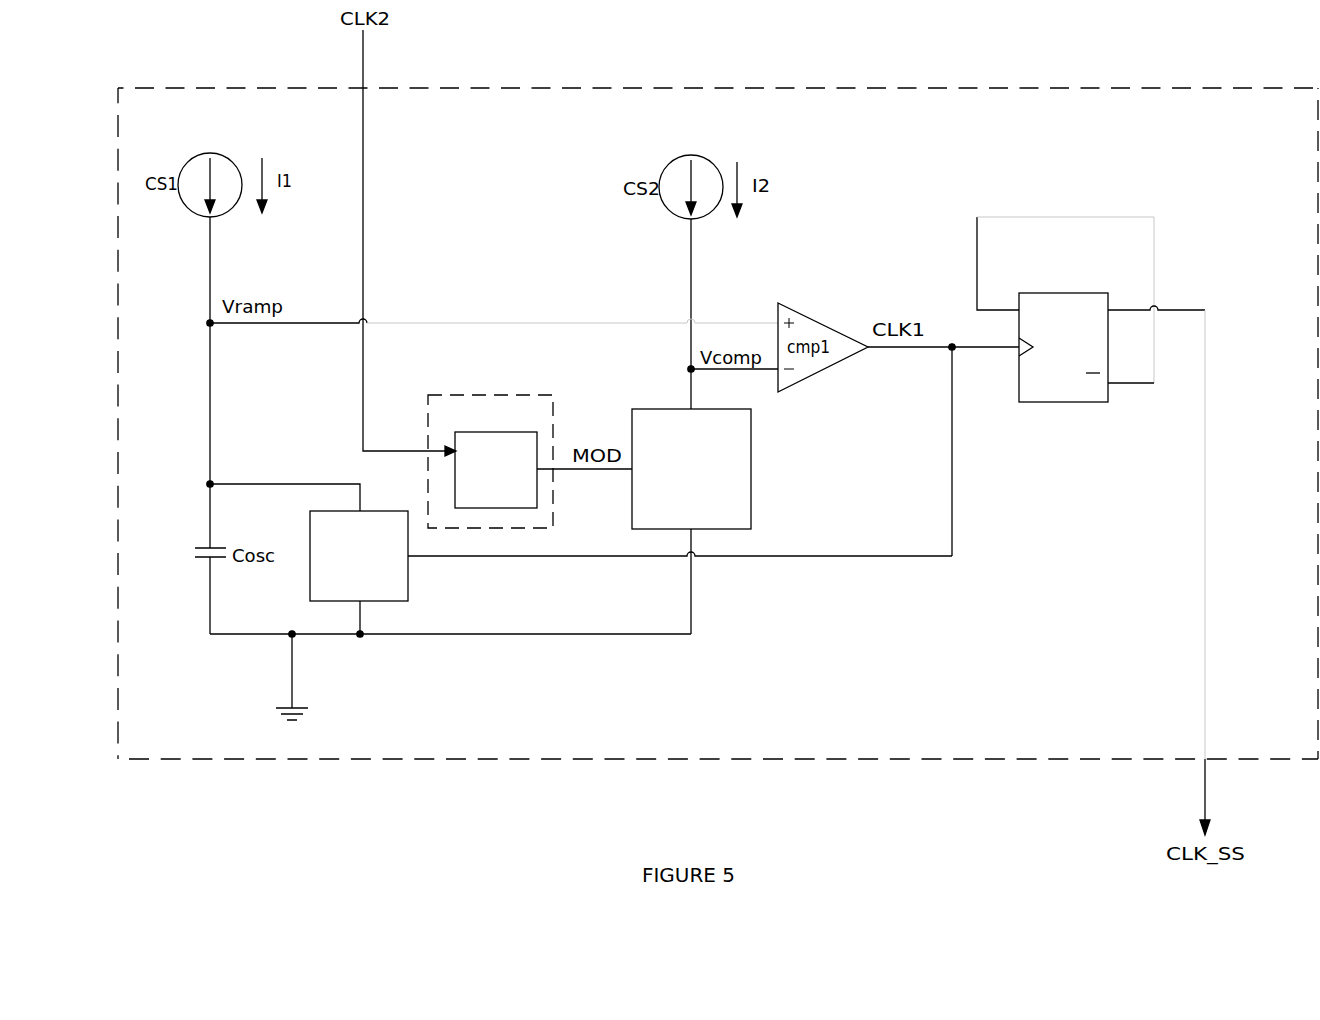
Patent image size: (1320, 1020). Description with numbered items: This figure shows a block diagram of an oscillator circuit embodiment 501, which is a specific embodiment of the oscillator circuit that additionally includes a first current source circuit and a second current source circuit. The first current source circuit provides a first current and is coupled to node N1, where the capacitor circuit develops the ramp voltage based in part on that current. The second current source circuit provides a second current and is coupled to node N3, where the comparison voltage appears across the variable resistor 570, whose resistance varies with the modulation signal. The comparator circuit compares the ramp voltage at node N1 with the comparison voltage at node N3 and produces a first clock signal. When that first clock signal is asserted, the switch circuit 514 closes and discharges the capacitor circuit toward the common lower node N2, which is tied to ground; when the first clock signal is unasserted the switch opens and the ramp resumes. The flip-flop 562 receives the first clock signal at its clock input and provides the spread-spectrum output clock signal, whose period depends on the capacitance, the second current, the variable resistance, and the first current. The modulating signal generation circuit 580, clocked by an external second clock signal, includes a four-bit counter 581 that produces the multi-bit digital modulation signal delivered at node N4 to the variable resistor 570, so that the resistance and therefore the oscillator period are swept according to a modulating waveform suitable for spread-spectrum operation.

The oscillator circuit embodiment 501 is at (1025, 126).
The switch circuit 514 is at (374, 589).
The flip-flop 562 is at (1078, 358).
The variable resistor 570 is at (708, 501).
The modulating signal generation circuit 580 is at (468, 420).
The four-bit counter 581 is at (510, 497).
The node N1 is at (208, 323).
The node N2 is at (361, 638).
The node N3 is at (689, 369).
The node N4 is at (603, 474).